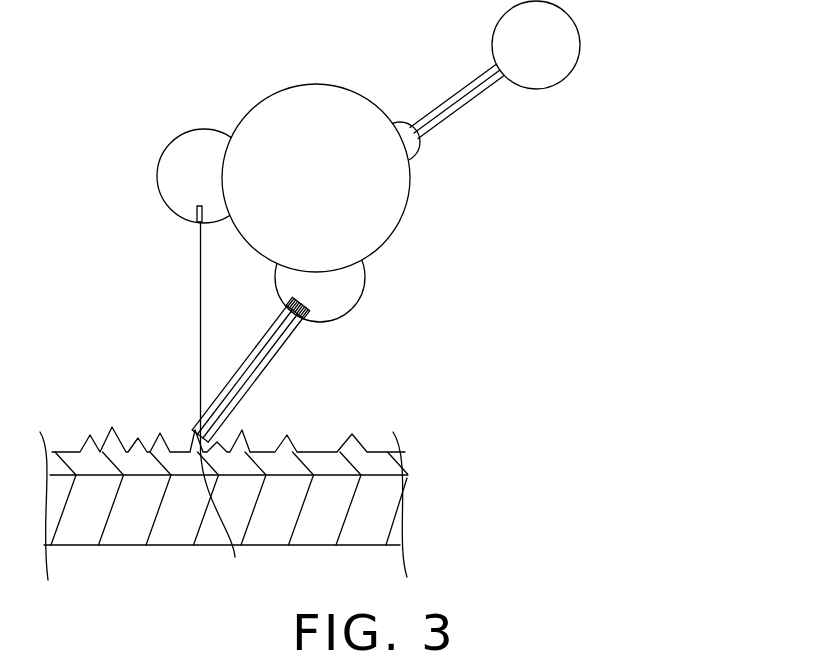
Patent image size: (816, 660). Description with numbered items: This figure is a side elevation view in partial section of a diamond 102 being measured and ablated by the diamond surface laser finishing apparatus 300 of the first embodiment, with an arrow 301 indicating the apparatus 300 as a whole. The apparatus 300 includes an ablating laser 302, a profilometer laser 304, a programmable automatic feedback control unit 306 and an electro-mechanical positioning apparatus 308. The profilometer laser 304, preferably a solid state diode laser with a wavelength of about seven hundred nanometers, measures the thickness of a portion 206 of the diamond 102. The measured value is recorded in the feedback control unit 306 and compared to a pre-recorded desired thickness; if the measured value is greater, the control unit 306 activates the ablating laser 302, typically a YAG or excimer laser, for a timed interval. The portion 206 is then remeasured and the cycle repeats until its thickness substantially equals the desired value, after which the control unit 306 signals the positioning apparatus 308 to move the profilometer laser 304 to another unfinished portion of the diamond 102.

The diamond surface laser finishing apparatus 300 is at (413, 221).
The direction indicator / probe element 301 is at (163, 240).
The ablating laser 302 is at (366, 285).
The profilometer laser 304 is at (164, 158).
The programmable automatic feedback control unit 306 is at (411, 175).
The electro-mechanical positioning apparatus 308 is at (485, 88).
The portion 206 is at (229, 404).
The diamond 102 is at (400, 460).